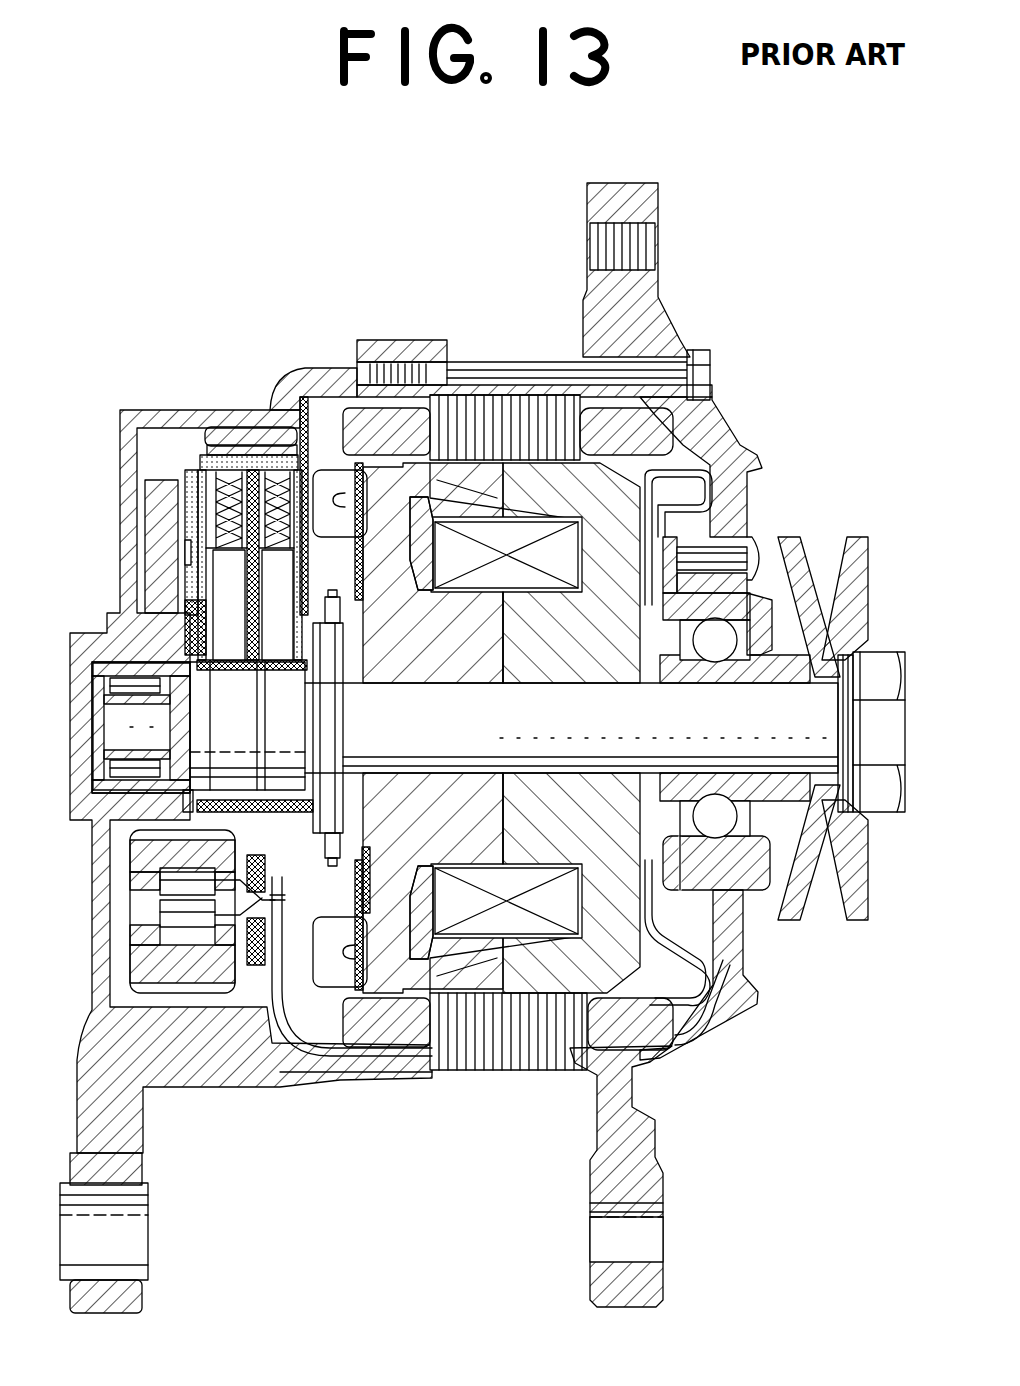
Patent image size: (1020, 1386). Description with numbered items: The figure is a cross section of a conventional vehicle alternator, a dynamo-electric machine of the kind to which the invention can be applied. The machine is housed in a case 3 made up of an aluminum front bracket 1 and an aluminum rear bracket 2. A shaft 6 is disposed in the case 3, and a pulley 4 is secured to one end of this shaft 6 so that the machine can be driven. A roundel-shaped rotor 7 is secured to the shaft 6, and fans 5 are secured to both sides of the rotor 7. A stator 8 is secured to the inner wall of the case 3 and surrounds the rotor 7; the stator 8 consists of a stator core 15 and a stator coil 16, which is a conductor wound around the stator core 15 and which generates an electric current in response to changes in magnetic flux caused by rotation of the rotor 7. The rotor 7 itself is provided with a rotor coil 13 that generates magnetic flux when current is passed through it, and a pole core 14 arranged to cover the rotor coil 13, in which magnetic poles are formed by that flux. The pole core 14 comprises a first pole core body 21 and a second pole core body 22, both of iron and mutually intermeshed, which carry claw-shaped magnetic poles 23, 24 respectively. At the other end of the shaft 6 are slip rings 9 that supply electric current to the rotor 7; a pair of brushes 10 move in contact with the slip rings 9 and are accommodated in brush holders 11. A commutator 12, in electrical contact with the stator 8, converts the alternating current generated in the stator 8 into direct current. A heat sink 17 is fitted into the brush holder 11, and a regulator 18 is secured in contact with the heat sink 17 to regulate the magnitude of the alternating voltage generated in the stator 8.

The front bracket 1 is at (718, 1033).
The rear bracket 2 is at (208, 1075).
The case 3 is at (307, 370).
The pulley 4 is at (863, 537).
The fans 5 is at (327, 1033).
The shaft 6 is at (820, 737).
The rotor 7 is at (740, 457).
The stator 8 is at (561, 713).
The slip rings 9 is at (232, 770).
The brushes 10 is at (225, 570).
The brush holders 11 is at (210, 573).
The commutator 12 is at (92, 912).
The rotor coil 13 is at (513, 960).
The pole core 14 is at (501, 708).
The stator core 15 is at (517, 480).
The stator coil 16 is at (688, 430).
The heat sink 17 is at (150, 510).
The regulator 18 is at (193, 480).
The first pole core body 21 is at (700, 1046).
The second pole core body 22 is at (387, 880).
The claw-shaped magnetic poles 23 is at (530, 487).
The claw-shaped magnetic poles 24 is at (450, 497).